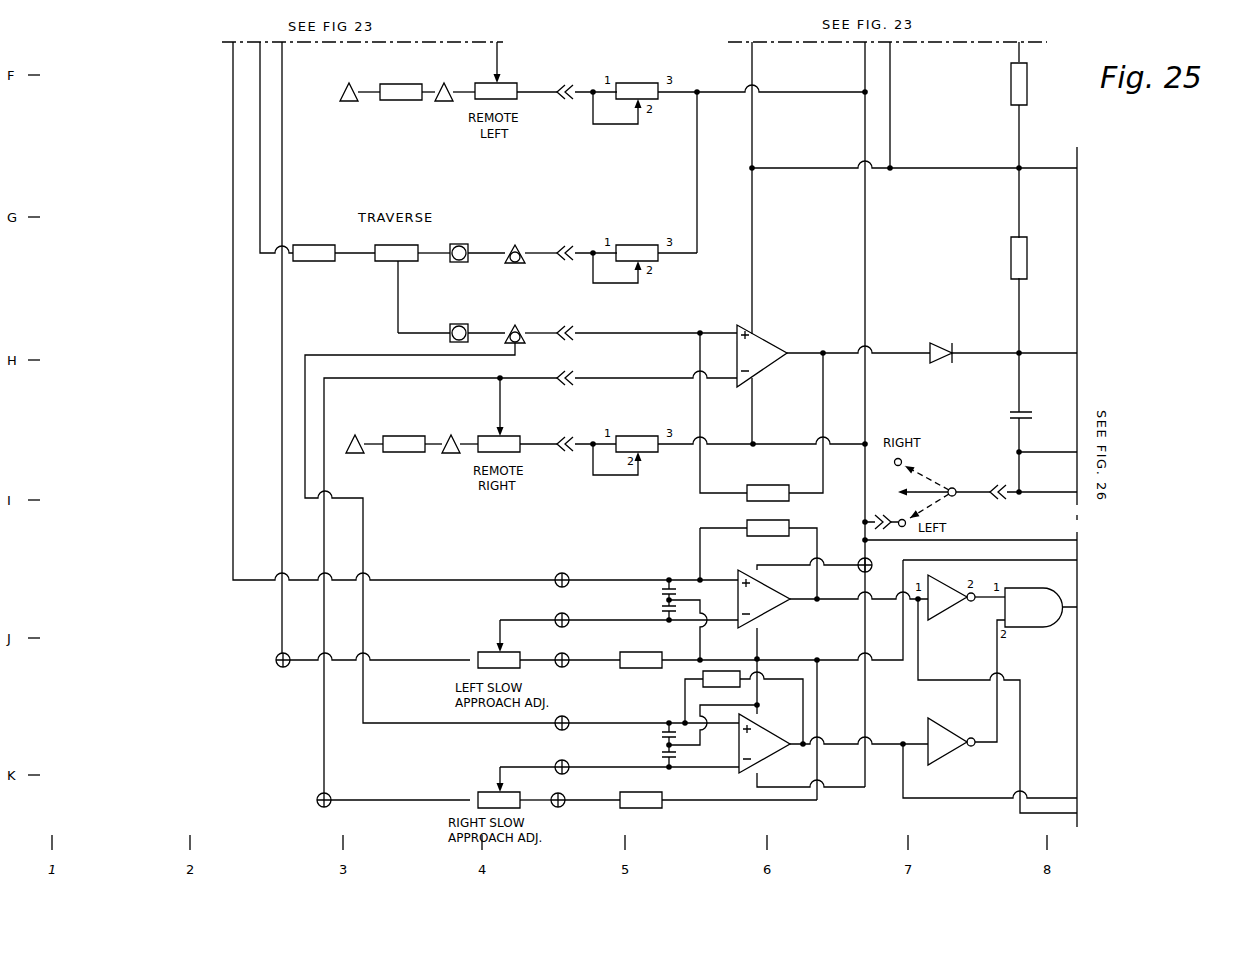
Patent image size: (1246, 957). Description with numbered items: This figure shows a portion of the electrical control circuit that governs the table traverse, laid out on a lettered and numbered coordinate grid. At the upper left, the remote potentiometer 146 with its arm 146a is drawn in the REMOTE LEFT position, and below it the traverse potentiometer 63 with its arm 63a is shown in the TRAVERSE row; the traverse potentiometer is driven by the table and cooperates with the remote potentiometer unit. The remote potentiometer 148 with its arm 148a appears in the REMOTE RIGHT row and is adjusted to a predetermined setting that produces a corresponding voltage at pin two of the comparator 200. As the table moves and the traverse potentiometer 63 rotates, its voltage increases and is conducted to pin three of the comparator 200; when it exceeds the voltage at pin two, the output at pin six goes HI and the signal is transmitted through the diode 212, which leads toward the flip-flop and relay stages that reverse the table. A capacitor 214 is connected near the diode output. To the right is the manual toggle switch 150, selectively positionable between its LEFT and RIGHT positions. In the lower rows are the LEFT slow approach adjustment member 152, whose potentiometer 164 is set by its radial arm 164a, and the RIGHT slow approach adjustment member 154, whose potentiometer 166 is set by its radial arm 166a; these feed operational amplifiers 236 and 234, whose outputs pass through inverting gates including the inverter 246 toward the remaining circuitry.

The remote potentiometer 146 is at (470, 99).
The arm of remote potentiometer 146a is at (493, 76).
The traverse potentiometer 63 is at (388, 262).
The arm of traverse potentiometer 63a is at (402, 276).
The remote potentiometer 148 is at (473, 456).
The arm of remote potentiometer 148a is at (502, 430).
The comparator 200 is at (767, 349).
The diode 212 is at (942, 343).
The capacitor 214 is at (1013, 414).
The manual switch 150 is at (928, 474).
The manual adjustment member 152 is at (487, 640).
The potentiometer 164 is at (516, 656).
The radial arm of potentiometer 164a is at (495, 646).
The operational amplifier 236 is at (768, 607).
The operational amplifier 234 is at (748, 768).
The manual adjustment member 154 is at (478, 777).
The potentiometer 166 is at (486, 796).
The radial arm of potentiometer 166a is at (504, 786).
The inverter 246 is at (946, 758).